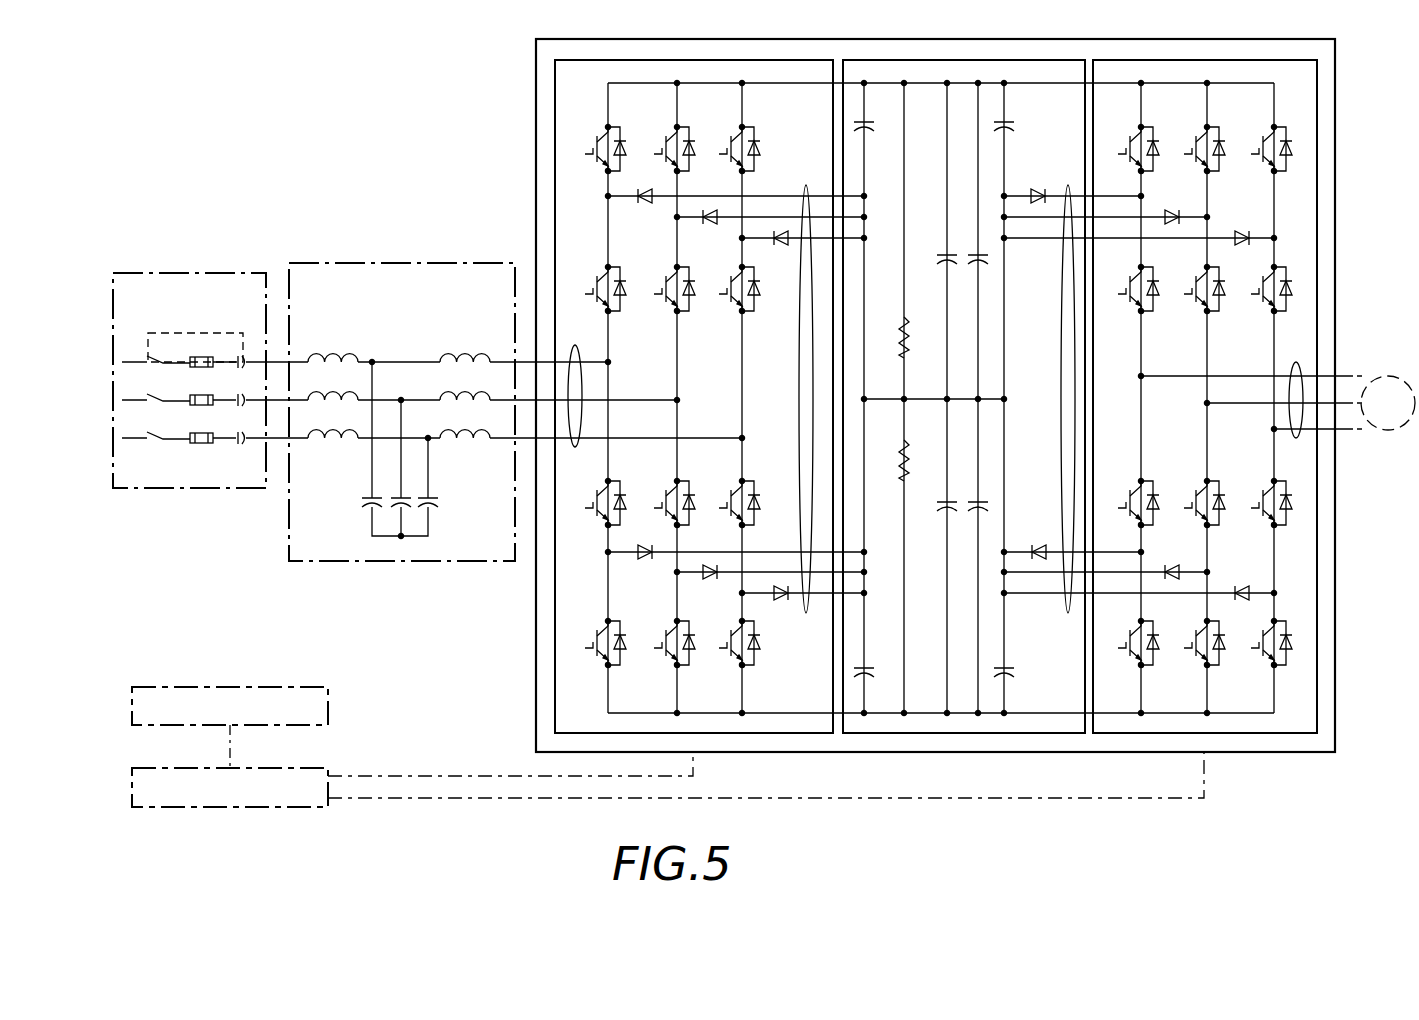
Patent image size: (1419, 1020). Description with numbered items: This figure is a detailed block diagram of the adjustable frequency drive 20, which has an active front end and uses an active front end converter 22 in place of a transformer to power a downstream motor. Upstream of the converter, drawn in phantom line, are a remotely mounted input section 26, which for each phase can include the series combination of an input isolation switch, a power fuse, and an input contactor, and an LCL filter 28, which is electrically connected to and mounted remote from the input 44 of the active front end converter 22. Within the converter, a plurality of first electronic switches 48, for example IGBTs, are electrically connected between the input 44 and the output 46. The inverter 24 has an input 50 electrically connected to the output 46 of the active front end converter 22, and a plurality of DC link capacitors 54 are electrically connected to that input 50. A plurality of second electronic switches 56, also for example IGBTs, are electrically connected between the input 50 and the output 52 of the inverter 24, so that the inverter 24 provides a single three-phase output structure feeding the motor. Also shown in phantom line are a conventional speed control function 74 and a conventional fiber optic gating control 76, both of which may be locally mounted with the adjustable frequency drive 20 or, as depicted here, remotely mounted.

The adjustable frequency drive 20 is at (1335, 702).
The active front end converter 22 is at (735, 756).
The inverter 24 is at (1148, 756).
The input section 26 is at (183, 273).
The LCL filter 28 is at (370, 263).
The input 44 is at (575, 346).
The output 46 is at (806, 186).
The first electronic switches 48 is at (605, 126).
The input 50 is at (1068, 186).
The output 52 is at (1296, 363).
The DC link capacitors 54 is at (953, 756).
The second electronic switches 56 is at (1138, 126).
The speed control function 74 is at (328, 694).
The fiber optic gating control 76 is at (205, 807).